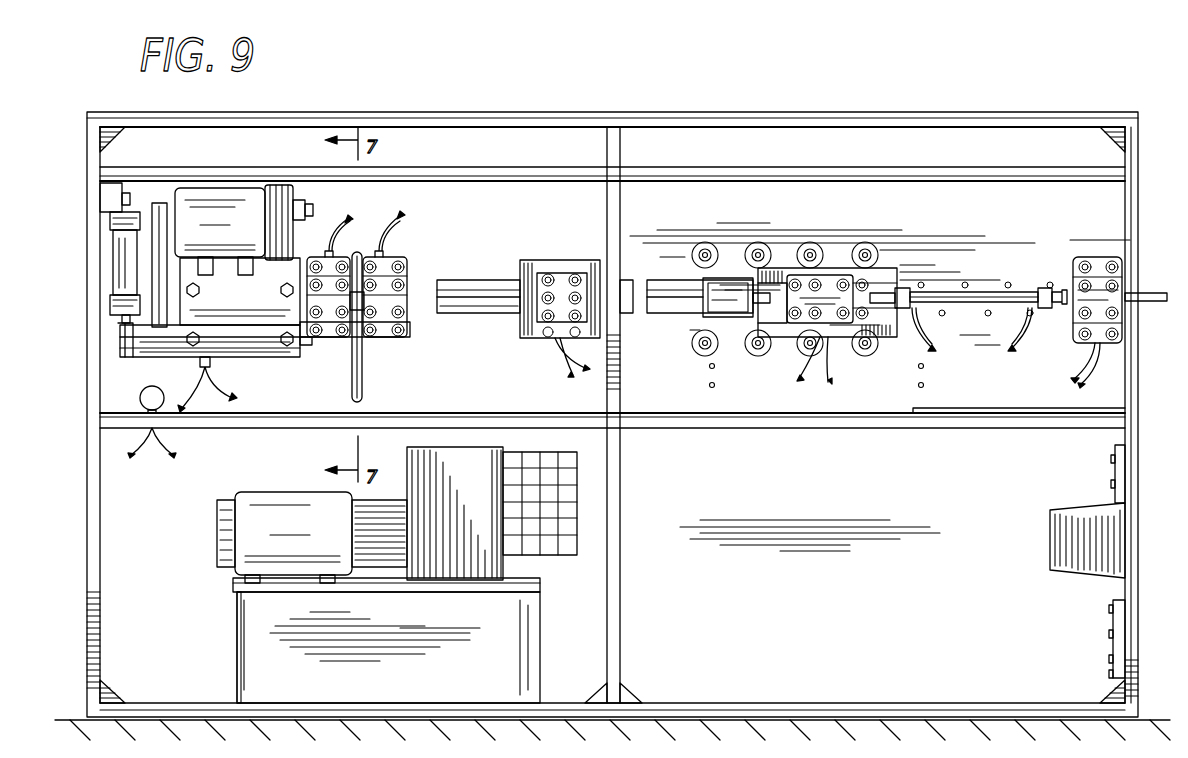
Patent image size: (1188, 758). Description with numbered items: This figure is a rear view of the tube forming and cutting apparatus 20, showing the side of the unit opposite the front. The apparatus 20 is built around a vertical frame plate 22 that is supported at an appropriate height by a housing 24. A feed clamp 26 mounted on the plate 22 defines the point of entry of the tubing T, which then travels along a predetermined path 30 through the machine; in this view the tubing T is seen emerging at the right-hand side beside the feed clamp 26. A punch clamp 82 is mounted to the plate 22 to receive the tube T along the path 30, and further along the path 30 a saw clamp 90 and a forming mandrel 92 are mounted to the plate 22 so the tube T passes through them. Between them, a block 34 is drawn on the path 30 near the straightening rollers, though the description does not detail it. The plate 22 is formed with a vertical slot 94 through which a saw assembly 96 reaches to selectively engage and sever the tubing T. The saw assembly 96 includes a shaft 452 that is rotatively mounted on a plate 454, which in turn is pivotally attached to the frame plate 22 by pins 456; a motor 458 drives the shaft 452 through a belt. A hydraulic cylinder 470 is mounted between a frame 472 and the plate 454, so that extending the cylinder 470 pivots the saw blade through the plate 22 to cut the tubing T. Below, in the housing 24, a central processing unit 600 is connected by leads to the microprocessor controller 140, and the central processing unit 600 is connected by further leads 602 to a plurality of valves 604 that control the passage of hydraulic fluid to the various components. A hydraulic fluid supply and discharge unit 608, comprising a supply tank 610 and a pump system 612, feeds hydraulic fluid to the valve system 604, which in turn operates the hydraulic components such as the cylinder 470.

The tube forming and cutting apparatus 20 is at (985, 81).
The vertical frame plate 22 is at (700, 216).
The housing 24 is at (745, 113).
The feed clamp 26 is at (1100, 285).
The predetermined path 30 is at (465, 295).
The carriage block 34 is at (831, 285).
The punch clamp 82 is at (565, 278).
The saw clamp 90 is at (407, 298).
The forming mandrel 92 is at (332, 305).
The vertical slot 94 is at (362, 400).
The saw assembly 96 is at (362, 360).
The microprocessor controller 140 is at (1146, 562).
The shaft 452 is at (315, 347).
The plate 454 is at (138, 358).
The pins 456 is at (313, 212).
The motor 458 is at (215, 190).
The hydraulic cylinder 470 is at (110, 252).
The frame 472 is at (120, 185).
The central processing unit 600 is at (1054, 530).
The leads 602 is at (1113, 630).
The valves 604 is at (573, 496).
The hydraulic fluid supply and discharge unit 608 is at (233, 628).
The supply tank 610 is at (528, 655).
The pump system 612 is at (238, 528).
The tubing T is at (1151, 293).